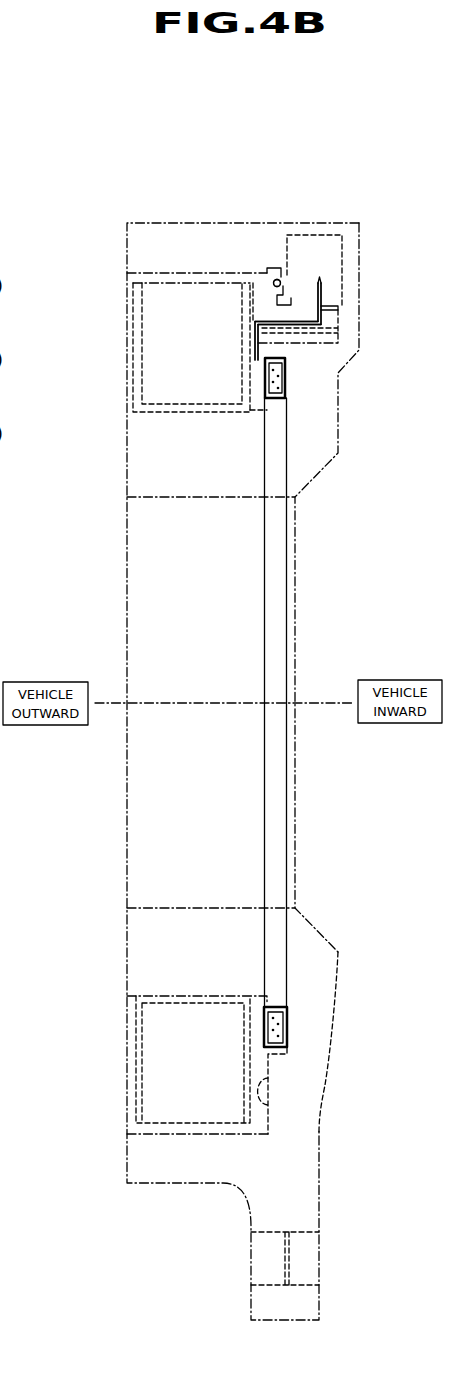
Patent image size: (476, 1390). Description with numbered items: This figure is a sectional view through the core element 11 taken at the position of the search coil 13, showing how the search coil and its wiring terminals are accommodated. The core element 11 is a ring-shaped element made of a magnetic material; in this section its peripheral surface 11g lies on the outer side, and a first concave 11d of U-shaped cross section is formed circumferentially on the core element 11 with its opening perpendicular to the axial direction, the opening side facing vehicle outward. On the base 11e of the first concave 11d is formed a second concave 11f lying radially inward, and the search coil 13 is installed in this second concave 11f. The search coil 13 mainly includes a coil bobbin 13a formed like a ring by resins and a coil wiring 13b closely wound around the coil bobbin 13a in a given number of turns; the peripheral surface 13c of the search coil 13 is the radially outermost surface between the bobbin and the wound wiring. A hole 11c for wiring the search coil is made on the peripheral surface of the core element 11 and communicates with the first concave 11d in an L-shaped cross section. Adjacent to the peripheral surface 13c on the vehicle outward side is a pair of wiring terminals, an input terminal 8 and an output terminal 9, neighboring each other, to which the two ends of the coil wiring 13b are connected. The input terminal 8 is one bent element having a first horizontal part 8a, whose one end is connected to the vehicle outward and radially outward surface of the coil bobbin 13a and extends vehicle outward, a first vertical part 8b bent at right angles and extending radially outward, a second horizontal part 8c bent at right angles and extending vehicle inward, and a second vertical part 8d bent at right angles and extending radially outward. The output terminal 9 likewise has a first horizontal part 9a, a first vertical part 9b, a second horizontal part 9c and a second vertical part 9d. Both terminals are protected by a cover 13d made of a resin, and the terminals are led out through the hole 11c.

The input terminal 8 is at (351, 289).
The output terminal 9 is at (319, 293).
The first horizontal part 8a is at (163, 665).
The first horizontal part 9a is at (262, 367).
The first vertical part 8b is at (179, 346).
The first vertical part 9b is at (255, 348).
The second horizontal part 8c is at (297, 226).
The second horizontal part 9c is at (312, 318).
The second vertical part 8d is at (392, 281).
The second vertical part 9d is at (340, 310).
The core element 11 is at (135, 211).
The hole for wiring the search coil 11c is at (315, 262).
The first concave 11d is at (127, 279).
The base 11e is at (268, 1106).
The second concave 11f is at (277, 1055).
The peripheral surface 11g is at (175, 223).
The search coil 13 is at (288, 377).
The coil bobbin 13a is at (282, 399).
The coil wiring 13b is at (285, 406).
The peripheral surface 13c is at (288, 354).
The cover 13d is at (268, 282).